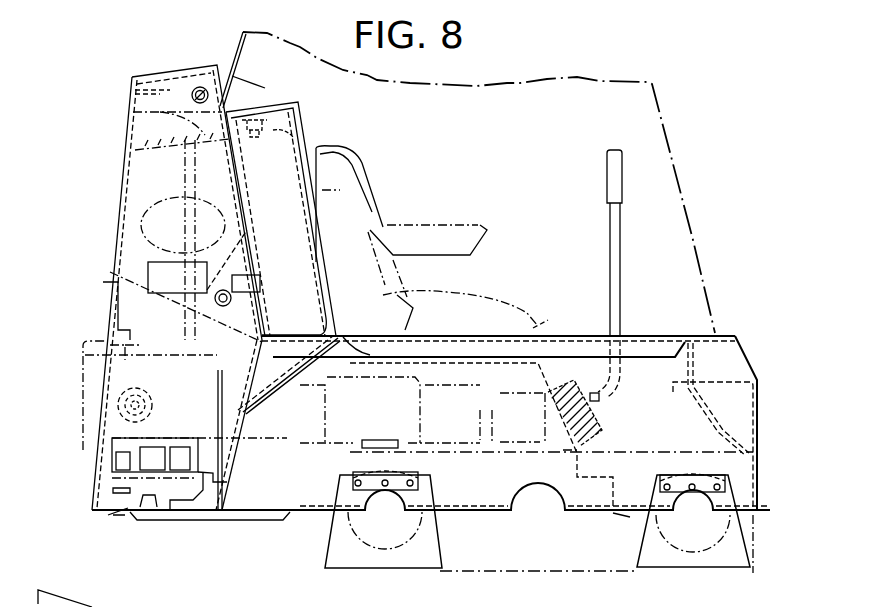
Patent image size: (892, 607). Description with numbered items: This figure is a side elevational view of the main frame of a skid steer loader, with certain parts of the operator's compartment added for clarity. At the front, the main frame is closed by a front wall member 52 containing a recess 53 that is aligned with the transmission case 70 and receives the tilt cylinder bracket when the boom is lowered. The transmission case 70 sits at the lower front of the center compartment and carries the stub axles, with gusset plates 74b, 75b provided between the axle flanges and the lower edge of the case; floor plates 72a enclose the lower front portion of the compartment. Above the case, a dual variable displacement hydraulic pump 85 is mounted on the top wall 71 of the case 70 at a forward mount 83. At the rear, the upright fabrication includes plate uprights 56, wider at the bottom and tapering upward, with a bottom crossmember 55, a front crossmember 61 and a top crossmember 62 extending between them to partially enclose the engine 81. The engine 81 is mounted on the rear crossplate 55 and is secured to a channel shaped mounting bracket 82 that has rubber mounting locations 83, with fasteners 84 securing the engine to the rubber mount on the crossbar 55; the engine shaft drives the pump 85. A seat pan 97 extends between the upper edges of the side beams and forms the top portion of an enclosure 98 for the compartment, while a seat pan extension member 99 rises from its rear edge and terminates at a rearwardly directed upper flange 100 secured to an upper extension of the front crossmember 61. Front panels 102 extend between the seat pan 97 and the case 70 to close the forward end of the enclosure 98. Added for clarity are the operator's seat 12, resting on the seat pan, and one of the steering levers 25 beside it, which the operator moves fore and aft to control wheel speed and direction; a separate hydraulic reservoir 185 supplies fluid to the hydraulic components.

The operator's seat 12 is at (353, 223).
The lever 25 is at (608, 226).
The front wall member 52 is at (760, 397).
The recess 53 is at (722, 421).
The bottom crossmember 55 is at (237, 520).
The upright 56 is at (140, 185).
The front crossmember 61 is at (240, 165).
The top crossmember 62 is at (127, 128).
The transmission case 70 is at (560, 545).
The top wall 71 is at (645, 453).
The floor plate 72a is at (463, 517).
The gusset plate 74b is at (703, 560).
The gusset plate 75b is at (410, 560).
The engine 81 is at (85, 360).
The mounting bracket 82 is at (173, 512).
The rubber mounting location 83 is at (402, 440).
The fastener 84 is at (88, 490).
The variable displacement hydraulic pump 85 is at (367, 400).
The seat pan 97 is at (520, 330).
The enclosure 98 is at (450, 400).
The seat pan extension member 99 is at (315, 180).
The upper flange 100 is at (273, 100).
The front panel 102 is at (582, 453).
The hydraulic reservoir 185 is at (307, 124).